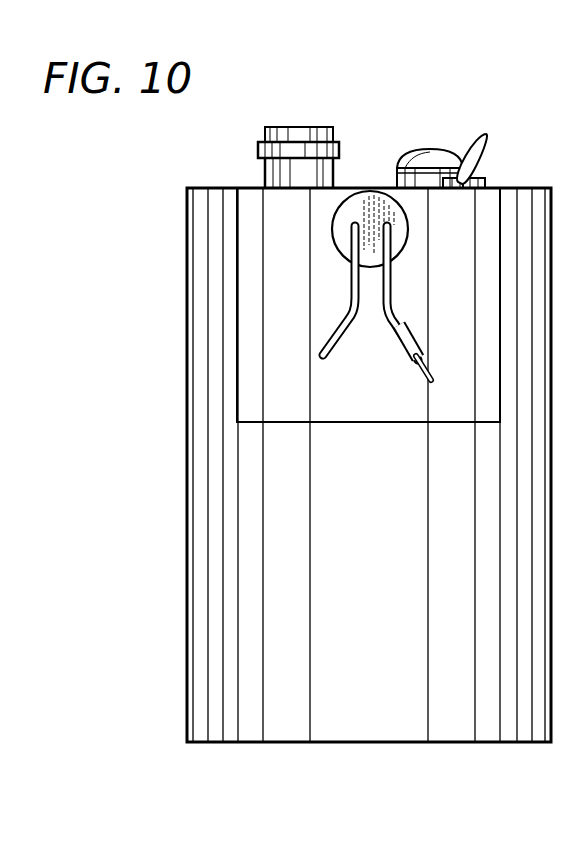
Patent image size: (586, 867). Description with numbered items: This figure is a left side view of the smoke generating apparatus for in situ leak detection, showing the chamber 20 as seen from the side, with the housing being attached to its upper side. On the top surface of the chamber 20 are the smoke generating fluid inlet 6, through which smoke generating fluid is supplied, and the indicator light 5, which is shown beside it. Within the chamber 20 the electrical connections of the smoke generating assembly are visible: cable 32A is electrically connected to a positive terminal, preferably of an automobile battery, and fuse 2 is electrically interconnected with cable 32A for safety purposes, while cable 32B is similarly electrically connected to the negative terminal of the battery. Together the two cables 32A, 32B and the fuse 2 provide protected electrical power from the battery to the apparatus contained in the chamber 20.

The chamber 20 is at (192, 478).
The smoke generating fluid inlet 6 is at (318, 138).
The indicator light 5 is at (438, 150).
The fuse 2 is at (410, 330).
The cable 32A is at (415, 366).
The cable 32B is at (340, 320).